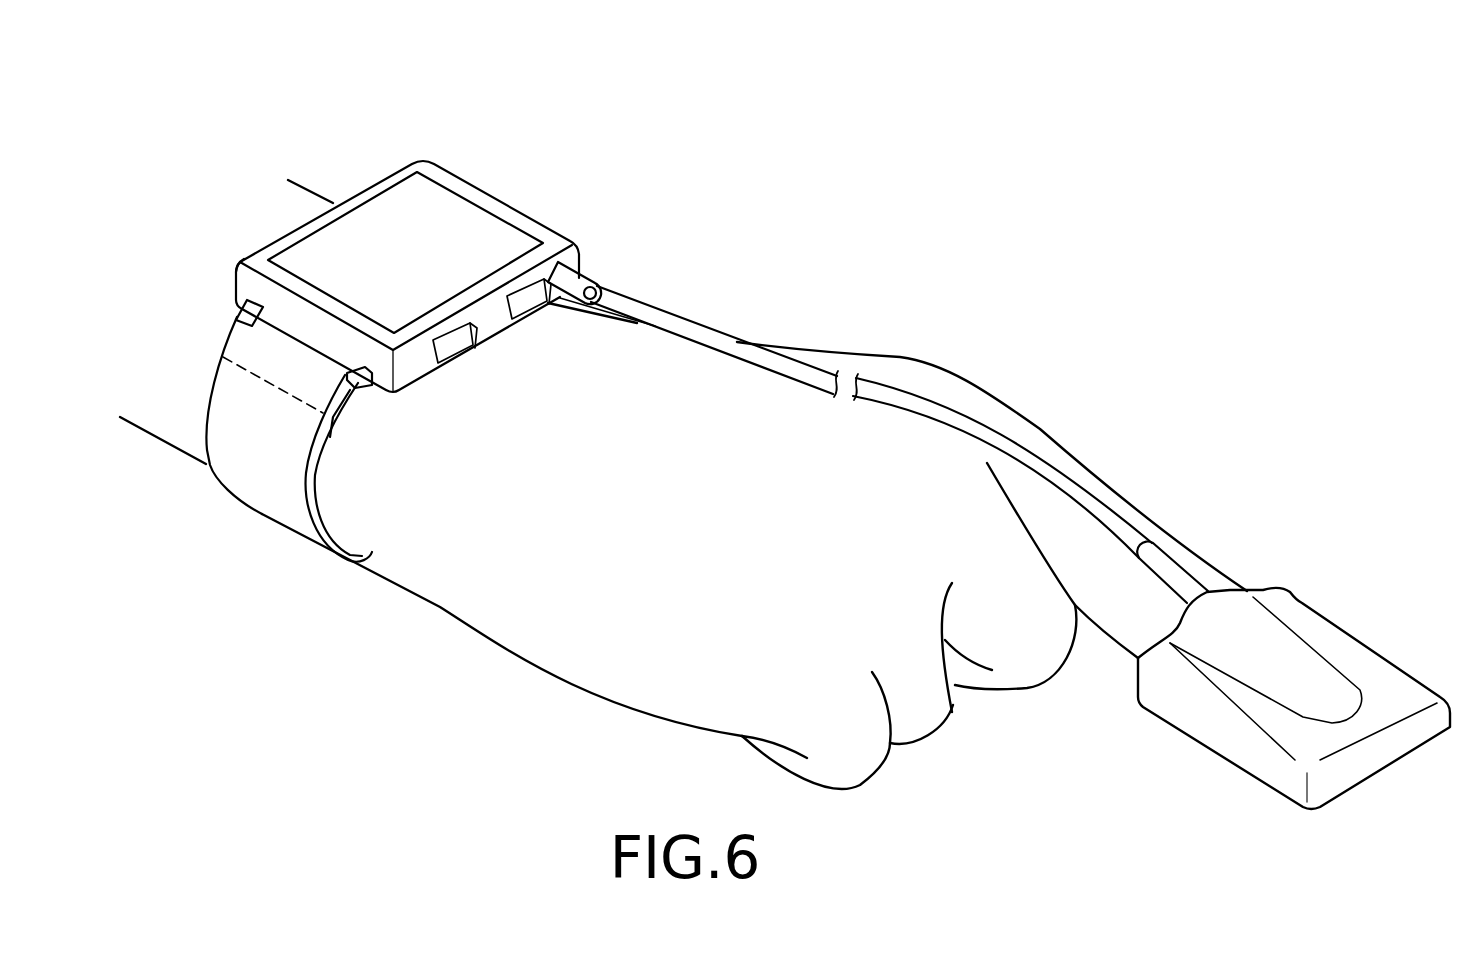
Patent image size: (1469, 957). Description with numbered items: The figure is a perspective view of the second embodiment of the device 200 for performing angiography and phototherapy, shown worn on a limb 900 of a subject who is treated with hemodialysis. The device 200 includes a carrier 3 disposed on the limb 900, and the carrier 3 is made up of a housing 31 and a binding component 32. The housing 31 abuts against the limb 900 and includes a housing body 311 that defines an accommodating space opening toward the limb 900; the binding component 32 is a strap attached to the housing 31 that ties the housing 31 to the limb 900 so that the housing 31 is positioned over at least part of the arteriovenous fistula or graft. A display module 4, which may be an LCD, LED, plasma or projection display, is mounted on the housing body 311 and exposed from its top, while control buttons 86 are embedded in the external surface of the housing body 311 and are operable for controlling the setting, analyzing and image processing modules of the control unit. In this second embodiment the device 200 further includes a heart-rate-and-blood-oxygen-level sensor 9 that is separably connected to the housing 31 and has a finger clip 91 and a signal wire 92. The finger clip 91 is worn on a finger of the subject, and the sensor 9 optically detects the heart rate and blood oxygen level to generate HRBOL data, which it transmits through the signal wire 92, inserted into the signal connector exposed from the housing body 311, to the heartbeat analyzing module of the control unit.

The device for performing angiography and phototherapy 200 is at (540, 118).
The carrier 3 is at (385, 317).
The housing 31 is at (445, 164).
The housing body 311 is at (253, 251).
The display module 4 is at (470, 223).
The control buttons 86 is at (455, 340).
The binding component 32 is at (282, 493).
The signal wire 92 is at (633, 313).
The limb 900 is at (976, 388).
The heart-rate-and-blood-oxygen-level (HRBOL) sensor 9 is at (1294, 666).
The finger clip 91 is at (1280, 627).